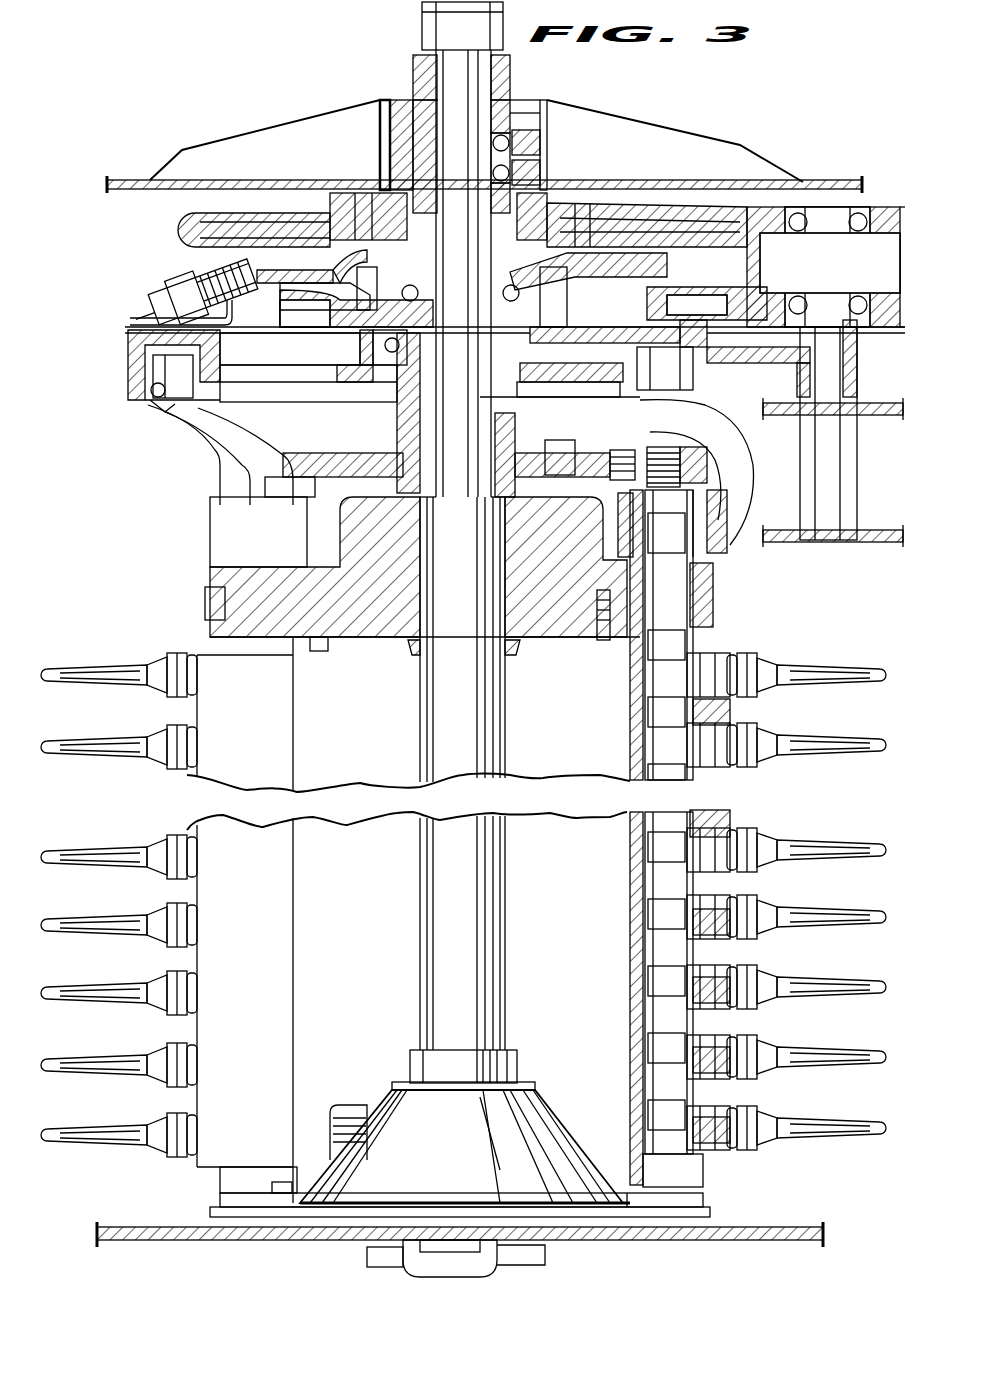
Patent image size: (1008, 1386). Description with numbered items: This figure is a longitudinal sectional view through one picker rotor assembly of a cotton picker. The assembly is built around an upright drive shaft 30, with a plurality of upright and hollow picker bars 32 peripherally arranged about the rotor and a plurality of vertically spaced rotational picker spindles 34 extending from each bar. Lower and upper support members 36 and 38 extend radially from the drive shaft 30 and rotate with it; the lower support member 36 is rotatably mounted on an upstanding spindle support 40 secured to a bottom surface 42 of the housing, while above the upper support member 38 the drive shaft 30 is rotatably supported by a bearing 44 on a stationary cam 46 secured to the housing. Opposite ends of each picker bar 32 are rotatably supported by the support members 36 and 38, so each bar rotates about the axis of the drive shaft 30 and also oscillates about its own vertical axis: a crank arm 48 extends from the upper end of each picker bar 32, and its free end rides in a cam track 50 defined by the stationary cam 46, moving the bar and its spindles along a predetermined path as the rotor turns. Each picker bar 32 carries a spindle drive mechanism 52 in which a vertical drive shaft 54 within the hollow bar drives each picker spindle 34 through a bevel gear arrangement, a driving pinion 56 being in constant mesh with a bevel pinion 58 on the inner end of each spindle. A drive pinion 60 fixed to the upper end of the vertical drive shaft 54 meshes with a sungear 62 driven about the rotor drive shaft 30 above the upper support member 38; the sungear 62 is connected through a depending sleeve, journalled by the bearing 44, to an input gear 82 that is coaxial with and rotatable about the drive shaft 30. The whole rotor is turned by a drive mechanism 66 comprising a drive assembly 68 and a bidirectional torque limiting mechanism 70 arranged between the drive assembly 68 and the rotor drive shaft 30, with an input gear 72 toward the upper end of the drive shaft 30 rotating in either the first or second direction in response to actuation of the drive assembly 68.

The drive shaft 30 is at (435, 735).
The picker bar 32 is at (268, 917).
The picker spindle 34 is at (95, 678).
The lower support member 36 is at (208, 1210).
The upper support member 38 is at (543, 635).
The spindle support 40 is at (390, 1278).
The bottom surface 42 is at (178, 1240).
The bearing 44 is at (378, 398).
The stationary cam 46 is at (125, 372).
The crank arm 48 is at (218, 500).
The cam track 50 is at (160, 404).
The spindle drive mechanism 52 is at (688, 597).
The vertical drive shaft 54 is at (650, 753).
The driving pinion 56 is at (650, 850).
The bevel pinion 58 is at (695, 845).
The drive pinion 60 is at (728, 518).
The sungear 62 is at (308, 490).
The drive mechanism 66 is at (588, 163).
The drive assembly 68 is at (858, 207).
The bidirectional torque limiting mechanism 70 is at (378, 128).
The input gear 72 is at (183, 228).
The input gear 82 is at (293, 312).